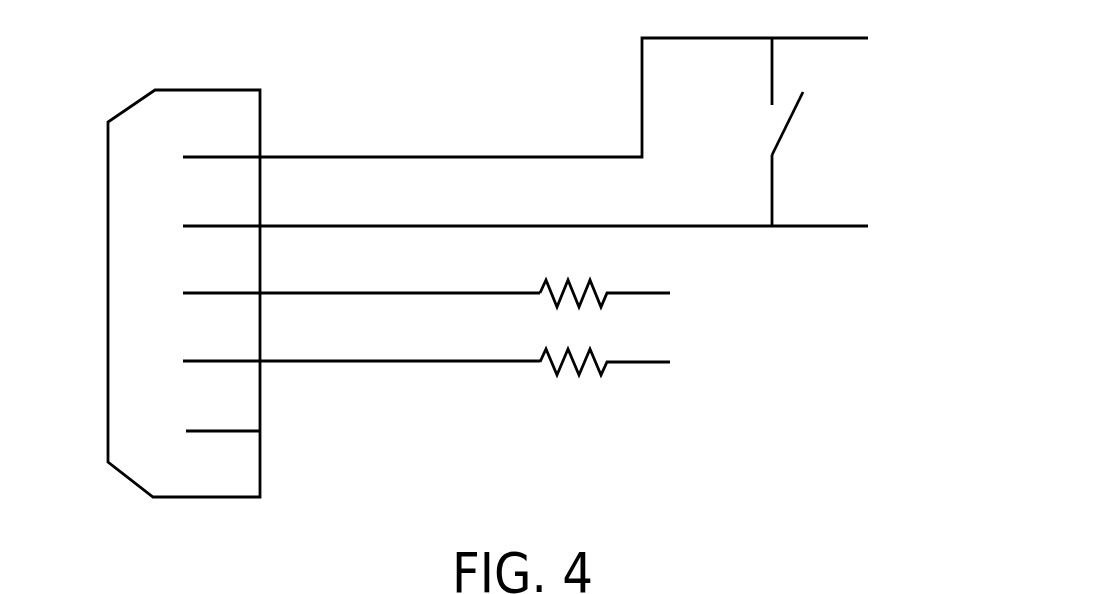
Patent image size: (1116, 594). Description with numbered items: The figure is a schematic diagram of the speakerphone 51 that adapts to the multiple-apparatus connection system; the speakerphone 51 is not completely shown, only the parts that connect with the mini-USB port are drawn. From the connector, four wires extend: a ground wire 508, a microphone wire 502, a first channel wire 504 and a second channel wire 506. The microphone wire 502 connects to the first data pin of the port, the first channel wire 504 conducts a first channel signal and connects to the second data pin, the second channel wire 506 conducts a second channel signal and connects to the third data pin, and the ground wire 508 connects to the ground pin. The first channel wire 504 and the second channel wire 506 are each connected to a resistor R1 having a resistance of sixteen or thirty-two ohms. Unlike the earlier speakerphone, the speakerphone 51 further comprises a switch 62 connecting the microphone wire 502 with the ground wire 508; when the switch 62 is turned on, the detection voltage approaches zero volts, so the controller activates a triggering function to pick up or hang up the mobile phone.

The speakerphone 51 is at (127, 110).
The ground wire 508 is at (338, 155).
The microphone wire 502 is at (338, 224).
The first channel wire 504 is at (338, 292).
The second channel wire 506 is at (338, 359).
The switch 62 is at (788, 127).
The resistor R1 is at (592, 285).